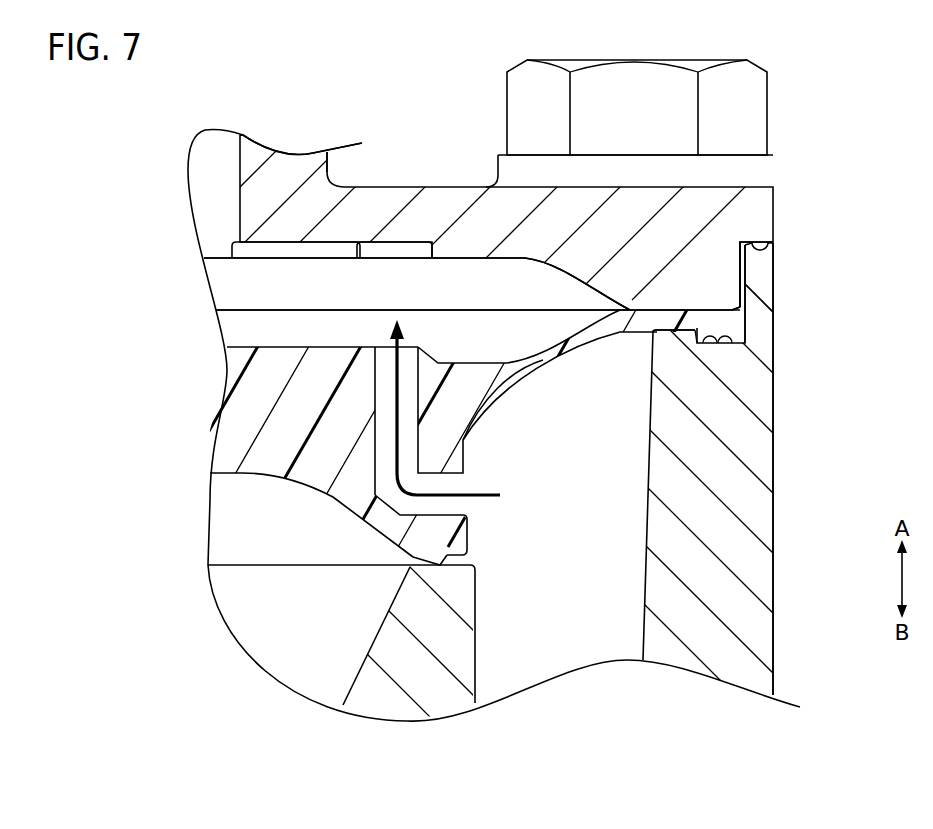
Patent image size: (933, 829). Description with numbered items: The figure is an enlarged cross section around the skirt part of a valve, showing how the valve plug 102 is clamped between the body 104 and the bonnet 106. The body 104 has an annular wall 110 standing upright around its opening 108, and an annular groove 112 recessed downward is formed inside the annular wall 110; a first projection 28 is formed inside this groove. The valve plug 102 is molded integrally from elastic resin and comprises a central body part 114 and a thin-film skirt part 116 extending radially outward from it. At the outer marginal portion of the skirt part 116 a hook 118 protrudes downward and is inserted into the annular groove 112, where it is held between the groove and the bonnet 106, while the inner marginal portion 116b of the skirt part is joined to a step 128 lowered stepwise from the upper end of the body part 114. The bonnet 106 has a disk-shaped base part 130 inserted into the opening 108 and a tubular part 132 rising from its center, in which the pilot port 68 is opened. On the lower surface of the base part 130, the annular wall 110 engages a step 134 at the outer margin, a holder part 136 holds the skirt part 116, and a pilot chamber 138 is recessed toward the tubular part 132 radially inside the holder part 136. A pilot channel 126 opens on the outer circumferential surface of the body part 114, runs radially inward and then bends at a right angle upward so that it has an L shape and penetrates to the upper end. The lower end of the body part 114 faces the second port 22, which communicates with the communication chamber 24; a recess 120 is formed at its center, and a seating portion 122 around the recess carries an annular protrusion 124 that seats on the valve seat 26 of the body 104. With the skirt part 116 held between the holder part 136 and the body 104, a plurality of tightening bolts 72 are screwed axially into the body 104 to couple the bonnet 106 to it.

The tightening bolt 72 is at (633, 80).
The bonnet 106 is at (380, 170).
The tubular part 132 is at (288, 160).
The base part 130 is at (467, 240).
The pilot port 68 is at (214, 162).
The valve plug 102 is at (213, 428).
The pilot chamber 138 is at (225, 280).
The body part 114 is at (327, 360).
The holder part 136 is at (618, 293).
The opening 108 is at (740, 262).
The hook 118 is at (720, 324).
The step 134 is at (768, 256).
The annular wall 110 is at (762, 283).
The annular groove 112 is at (700, 344).
The first projection 28 is at (665, 337).
The body 104 is at (778, 458).
The skirt part 116 is at (582, 338).
The inner marginal portion 116b is at (482, 375).
The step 128 is at (450, 360).
The pilot channel 126 is at (470, 485).
The seating portion 122 is at (467, 527).
The protrusion 124 is at (460, 563).
The recess 120 is at (255, 480).
The second port 22 is at (277, 627).
The communication chamber 24 is at (565, 645).
The valve seat 26 is at (445, 600).